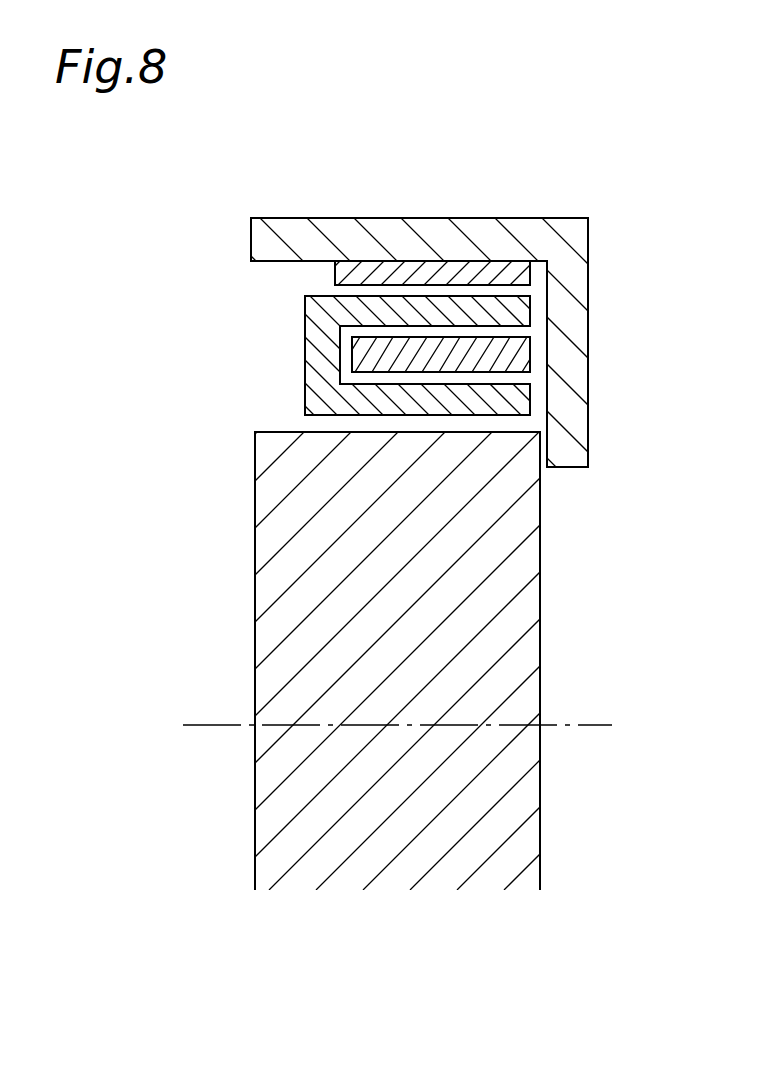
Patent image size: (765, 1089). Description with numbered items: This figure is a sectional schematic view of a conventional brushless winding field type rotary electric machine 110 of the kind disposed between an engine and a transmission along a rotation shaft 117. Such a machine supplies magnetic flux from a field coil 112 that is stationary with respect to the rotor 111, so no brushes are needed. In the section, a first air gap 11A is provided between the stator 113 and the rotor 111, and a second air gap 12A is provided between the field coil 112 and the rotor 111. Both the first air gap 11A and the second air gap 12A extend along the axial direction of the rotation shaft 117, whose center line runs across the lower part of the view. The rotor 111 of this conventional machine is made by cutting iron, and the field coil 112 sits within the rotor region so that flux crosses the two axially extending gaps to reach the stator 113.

The brushless winding field type rotary electric machine 110 is at (236, 320).
The first air gap 11A is at (370, 291).
The rotor 111 is at (498, 308).
The field coil 112 is at (367, 357).
The stator 113 is at (433, 272).
The second air gap 12A is at (505, 377).
The rotation shaft 117 is at (220, 725).